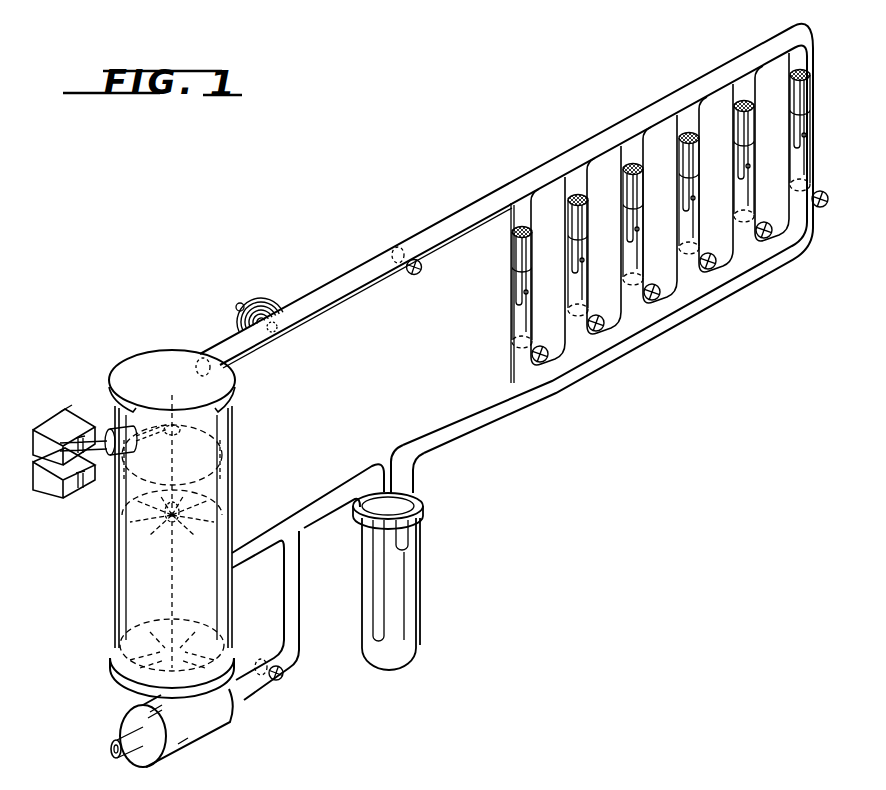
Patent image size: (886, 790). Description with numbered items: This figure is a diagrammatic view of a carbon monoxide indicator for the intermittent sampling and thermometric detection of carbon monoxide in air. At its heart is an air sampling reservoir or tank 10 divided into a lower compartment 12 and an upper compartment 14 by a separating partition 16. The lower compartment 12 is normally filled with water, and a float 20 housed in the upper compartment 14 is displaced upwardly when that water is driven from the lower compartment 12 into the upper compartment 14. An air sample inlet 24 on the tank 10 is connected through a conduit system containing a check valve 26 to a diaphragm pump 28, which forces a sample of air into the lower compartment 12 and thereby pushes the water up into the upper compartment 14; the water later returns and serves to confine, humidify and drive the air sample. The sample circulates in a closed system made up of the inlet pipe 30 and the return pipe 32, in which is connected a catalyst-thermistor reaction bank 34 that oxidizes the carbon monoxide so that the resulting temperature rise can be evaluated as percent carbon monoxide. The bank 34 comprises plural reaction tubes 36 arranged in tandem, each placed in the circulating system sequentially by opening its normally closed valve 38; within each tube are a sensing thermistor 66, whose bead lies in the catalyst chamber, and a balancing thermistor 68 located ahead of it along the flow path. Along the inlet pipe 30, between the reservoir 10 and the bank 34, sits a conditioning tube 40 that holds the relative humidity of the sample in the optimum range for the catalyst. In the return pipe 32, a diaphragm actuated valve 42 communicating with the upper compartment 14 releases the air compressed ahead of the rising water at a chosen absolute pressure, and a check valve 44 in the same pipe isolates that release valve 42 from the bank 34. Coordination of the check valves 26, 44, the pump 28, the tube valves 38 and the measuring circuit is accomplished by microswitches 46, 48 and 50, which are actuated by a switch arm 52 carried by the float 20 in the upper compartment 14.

The air sampling reservoir 10 is at (161, 524).
The lower compartment 12 is at (232, 607).
The upper compartment 14 is at (232, 481).
The separating partition 16 is at (133, 560).
The float 20 is at (237, 430).
The air sample inlet 24 is at (279, 520).
The check valve 26 is at (287, 673).
The diaphragm pump 28 is at (189, 747).
The inlet pipe 30 is at (497, 407).
The return pipe 32 is at (430, 227).
The catalyst-thermistor reaction bank 34 is at (725, 294).
The reaction tube 36 is at (664, 209).
The normally closed valve 38 is at (544, 346).
The conditioning tube 40 is at (425, 557).
The diaphragm actuated valve 42 is at (240, 300).
The check valve 44 is at (415, 276).
The microswitch 46 is at (44, 488).
The microswitch 48 is at (33, 430).
The microswitch 50 is at (68, 413).
The switch arm 52 is at (112, 458).
The sensing thermistor 66 is at (513, 283).
The balancing thermistor 68 is at (532, 312).